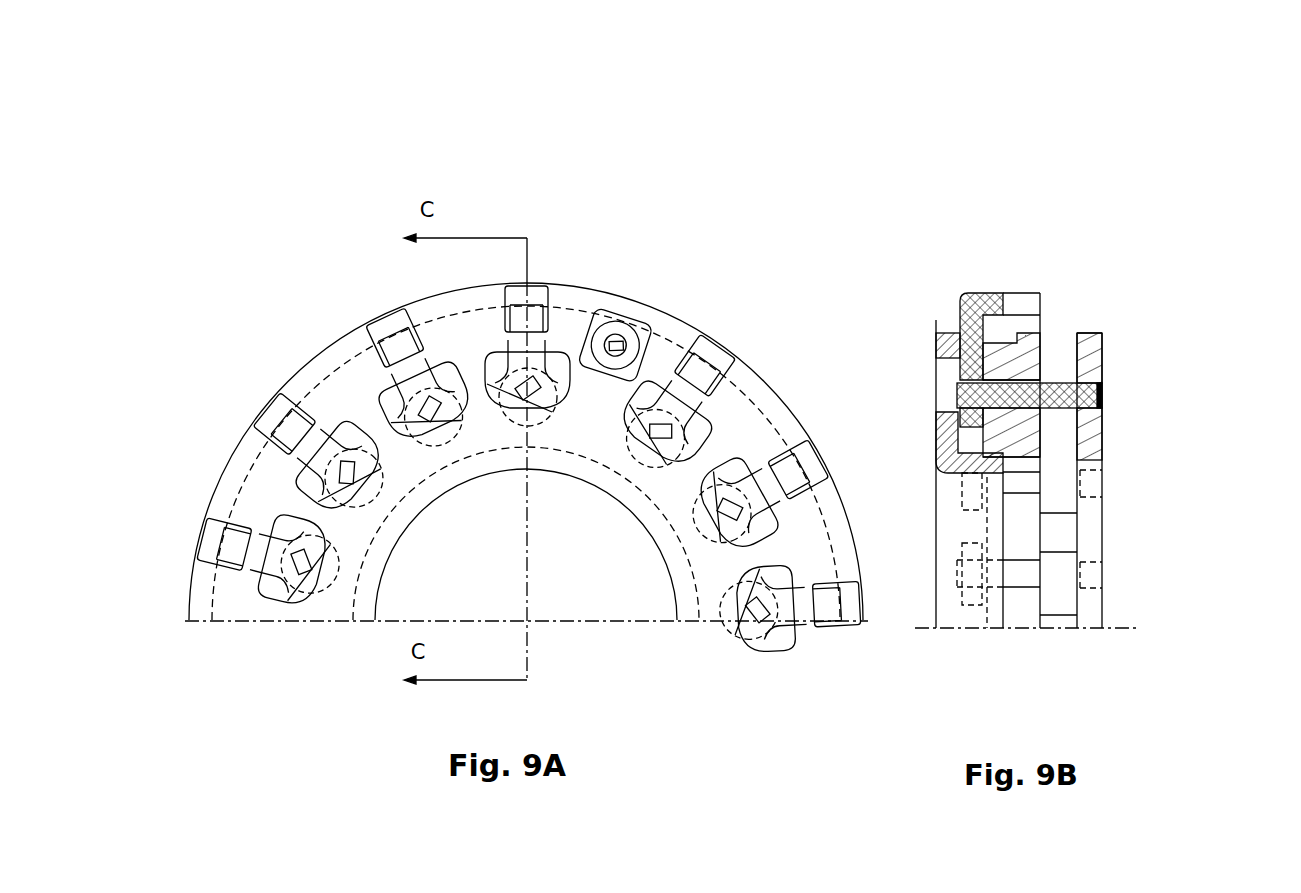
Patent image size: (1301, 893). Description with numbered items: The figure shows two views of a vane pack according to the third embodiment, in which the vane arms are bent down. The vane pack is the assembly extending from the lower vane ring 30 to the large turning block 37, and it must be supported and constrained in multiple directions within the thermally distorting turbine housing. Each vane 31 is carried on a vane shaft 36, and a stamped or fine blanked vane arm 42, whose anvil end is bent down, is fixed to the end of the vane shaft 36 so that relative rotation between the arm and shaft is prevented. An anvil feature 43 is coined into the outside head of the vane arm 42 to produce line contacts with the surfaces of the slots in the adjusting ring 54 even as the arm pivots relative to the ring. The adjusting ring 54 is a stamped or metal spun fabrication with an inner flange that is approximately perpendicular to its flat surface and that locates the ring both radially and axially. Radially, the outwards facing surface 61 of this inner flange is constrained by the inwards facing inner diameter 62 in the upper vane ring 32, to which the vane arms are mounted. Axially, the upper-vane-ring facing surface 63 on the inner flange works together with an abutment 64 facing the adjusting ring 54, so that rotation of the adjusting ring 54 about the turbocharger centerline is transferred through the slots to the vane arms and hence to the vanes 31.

In FIG. 9B, the lower vane ring 30 is at (1088, 363).
In FIG. 9A, the vane 31 is at (736, 595).
In FIG. 9B, the vane 31 is at (1062, 430).
In FIG. 9B, the upper vane ring 32 is at (1035, 356).
In FIG. 9B, the vane shaft 36 is at (958, 385).
In FIG. 9A, the large turning block 37 is at (620, 372).
In FIG. 9A, the vane arm 42 is at (705, 332).
In FIG. 9B, the vane arm 42 is at (980, 302).
In FIG. 9A, the anvil feature 43 is at (212, 512).
In FIG. 9A, the adjusting ring 54 is at (417, 347).
In FIG. 9B, the adjusting ring 54 is at (947, 340).
In FIG. 9A, the outwards facing surface 61 is at (333, 433).
In FIG. 9A, the inwards facing inner diameter 62 is at (450, 478).
In FIG. 9B, the upper-vane-ring facing surface 63 is at (998, 488).
In FIG. 9B, the abutment 64 is at (1010, 467).